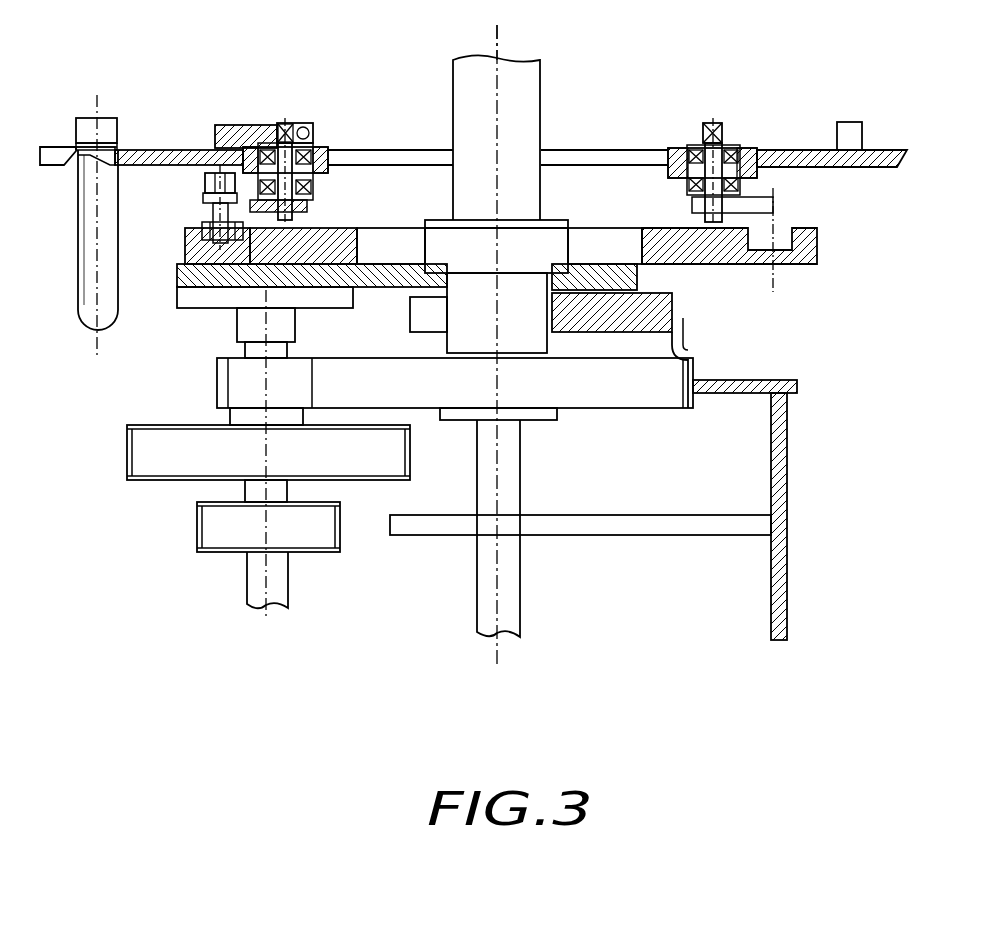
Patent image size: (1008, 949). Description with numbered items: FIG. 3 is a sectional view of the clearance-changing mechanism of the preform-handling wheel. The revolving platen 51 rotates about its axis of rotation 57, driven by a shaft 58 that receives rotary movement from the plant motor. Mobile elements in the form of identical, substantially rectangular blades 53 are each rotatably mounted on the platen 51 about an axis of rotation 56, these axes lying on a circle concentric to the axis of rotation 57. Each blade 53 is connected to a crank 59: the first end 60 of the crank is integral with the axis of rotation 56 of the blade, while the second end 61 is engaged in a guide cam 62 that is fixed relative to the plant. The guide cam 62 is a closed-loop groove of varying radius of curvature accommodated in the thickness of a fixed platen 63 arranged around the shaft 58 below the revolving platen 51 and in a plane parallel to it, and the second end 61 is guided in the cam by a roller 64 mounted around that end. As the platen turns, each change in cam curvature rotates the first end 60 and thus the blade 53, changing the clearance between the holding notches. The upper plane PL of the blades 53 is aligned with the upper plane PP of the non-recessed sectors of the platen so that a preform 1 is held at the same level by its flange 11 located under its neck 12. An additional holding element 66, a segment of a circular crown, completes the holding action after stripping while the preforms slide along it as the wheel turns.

The preform 1 is at (85, 315).
The flange 11 is at (78, 148).
The neck 12 is at (108, 120).
The revolving platen 51 is at (768, 150).
The blade 53 is at (207, 148).
The axis of rotation 56 is at (285, 122).
The axis of rotation of platen 57 is at (497, 30).
The shaft 58 is at (530, 100).
The crank 59 is at (325, 197).
The first end of crank 60 is at (303, 125).
The second end of crank 61 is at (205, 205).
The guide cam 62 is at (185, 265).
The fixed platen 63 is at (357, 243).
The roller 64 is at (190, 245).
The additional holding element 66 is at (62, 165).
The upper plane of blades PL is at (143, 150).
The upper plane of non-recessed sectors PP is at (827, 150).